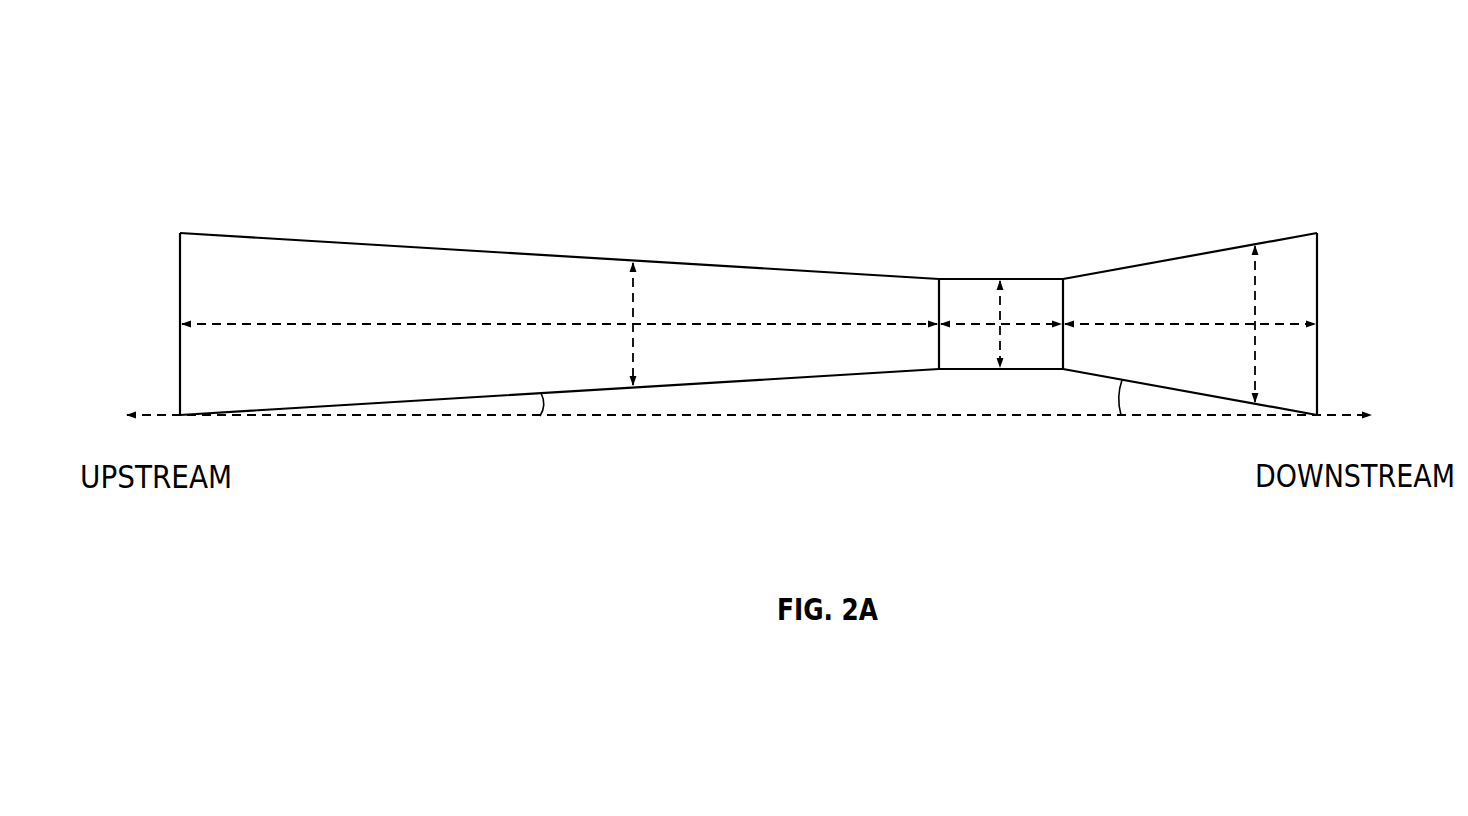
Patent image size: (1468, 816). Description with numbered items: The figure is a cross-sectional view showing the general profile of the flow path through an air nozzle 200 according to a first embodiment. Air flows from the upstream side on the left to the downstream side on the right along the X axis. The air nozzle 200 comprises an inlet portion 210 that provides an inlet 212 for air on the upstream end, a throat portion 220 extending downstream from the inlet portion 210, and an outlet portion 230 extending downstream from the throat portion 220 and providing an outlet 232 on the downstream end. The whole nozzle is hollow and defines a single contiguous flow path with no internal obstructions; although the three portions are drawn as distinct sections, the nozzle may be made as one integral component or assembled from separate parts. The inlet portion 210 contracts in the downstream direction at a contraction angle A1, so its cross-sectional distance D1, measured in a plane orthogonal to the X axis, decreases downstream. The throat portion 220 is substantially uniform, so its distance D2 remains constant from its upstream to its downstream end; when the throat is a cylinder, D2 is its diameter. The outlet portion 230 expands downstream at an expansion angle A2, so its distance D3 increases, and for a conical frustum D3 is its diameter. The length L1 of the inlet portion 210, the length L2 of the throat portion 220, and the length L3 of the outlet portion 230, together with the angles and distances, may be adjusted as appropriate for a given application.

The air nozzle 200 is at (265, 106).
The inlet portion 210 is at (422, 266).
The inlet 212 is at (180, 276).
The throat portion 220 is at (968, 293).
The outlet portion 230 is at (1178, 283).
The outlet 232 is at (1317, 278).
The length of inlet portion L1 is at (270, 326).
The length of throat portion L2 is at (980, 327).
The length of outlet portion L3 is at (1186, 326).
The distance of inlet portion D1 is at (634, 290).
The distance of throat portion D2 is at (1001, 306).
The distance of outlet portion D3 is at (1256, 271).
The contraction angle A1 is at (547, 405).
The expansion angle A2 is at (1116, 397).
The X axis X is at (772, 415).